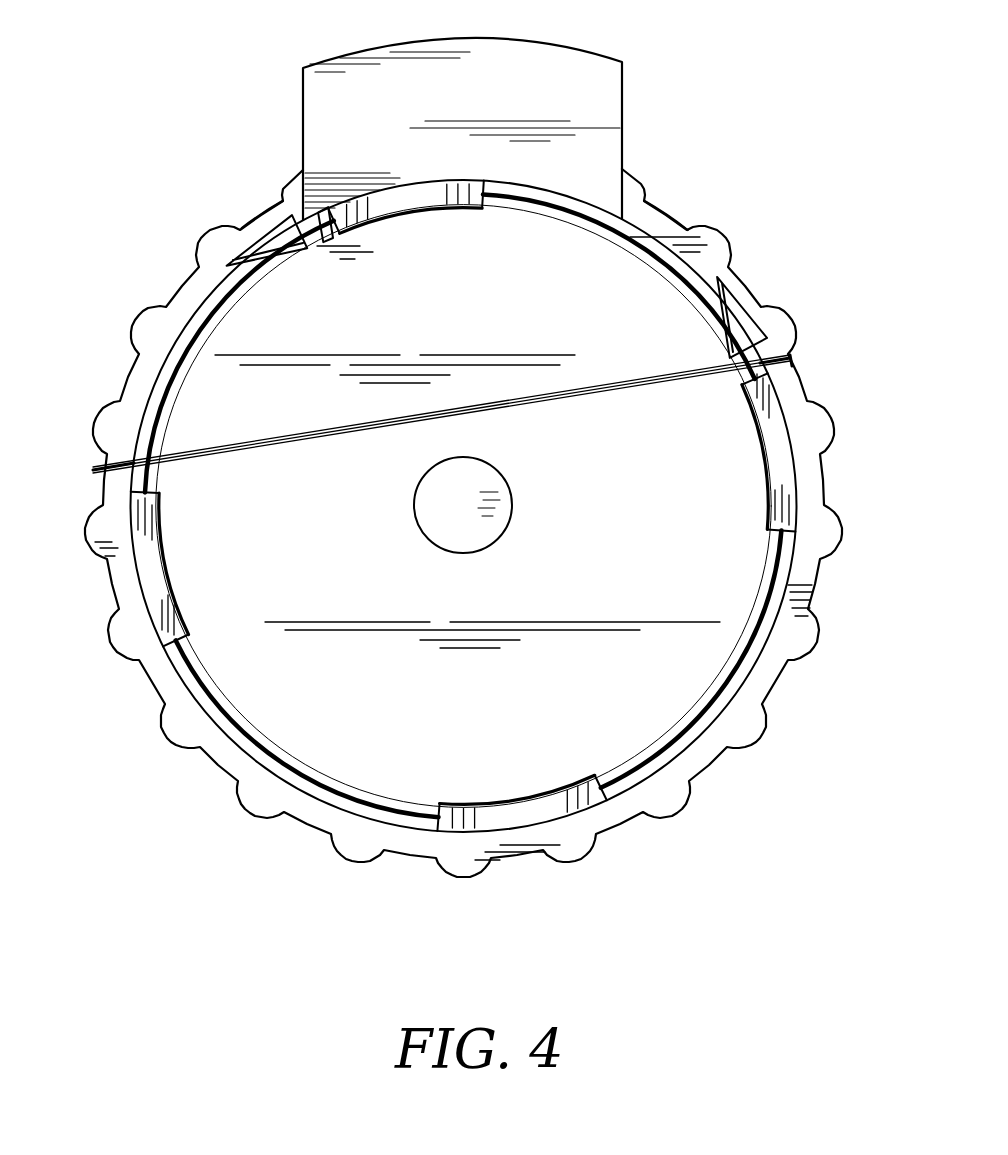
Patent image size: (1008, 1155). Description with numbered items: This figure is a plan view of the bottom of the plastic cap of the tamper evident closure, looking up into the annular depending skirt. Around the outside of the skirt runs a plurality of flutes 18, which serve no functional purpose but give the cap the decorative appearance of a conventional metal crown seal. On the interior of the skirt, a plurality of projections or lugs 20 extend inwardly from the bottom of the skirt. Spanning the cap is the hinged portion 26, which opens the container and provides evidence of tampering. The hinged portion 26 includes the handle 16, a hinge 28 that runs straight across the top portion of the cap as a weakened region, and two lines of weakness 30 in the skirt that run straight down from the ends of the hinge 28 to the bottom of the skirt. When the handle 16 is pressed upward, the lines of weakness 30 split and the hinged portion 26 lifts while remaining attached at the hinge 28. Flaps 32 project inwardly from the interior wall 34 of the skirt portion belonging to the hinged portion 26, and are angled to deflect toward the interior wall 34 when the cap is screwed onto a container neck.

The handle 16 is at (523, 40).
The flutes 18 is at (838, 418).
The lugs 20 is at (410, 213).
The hinged portion 26 is at (657, 153).
The hinge 28 is at (230, 448).
The lines of weakness 30 is at (100, 467).
The flaps 32 is at (288, 265).
The interior wall 34 is at (262, 230).